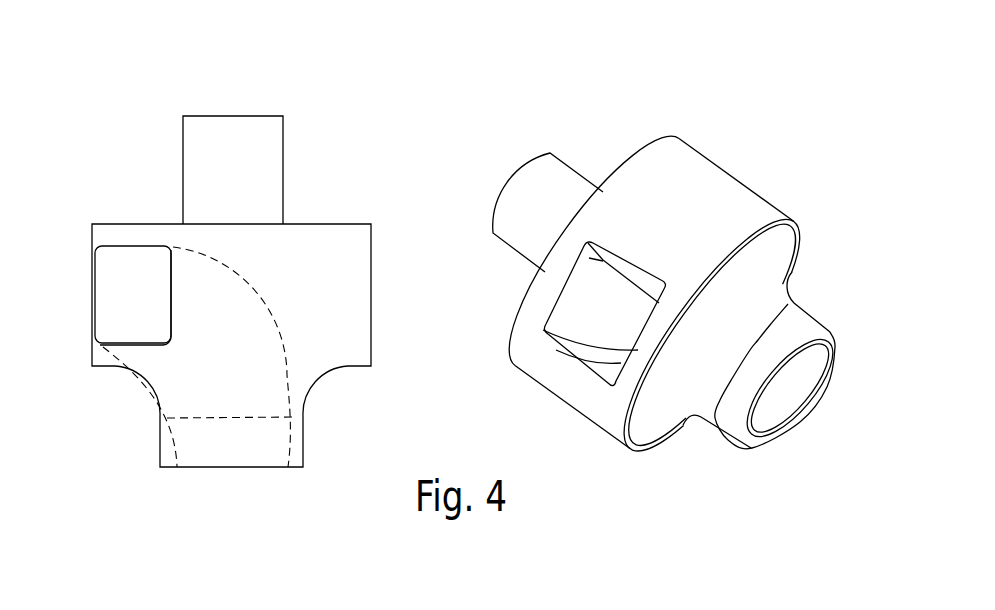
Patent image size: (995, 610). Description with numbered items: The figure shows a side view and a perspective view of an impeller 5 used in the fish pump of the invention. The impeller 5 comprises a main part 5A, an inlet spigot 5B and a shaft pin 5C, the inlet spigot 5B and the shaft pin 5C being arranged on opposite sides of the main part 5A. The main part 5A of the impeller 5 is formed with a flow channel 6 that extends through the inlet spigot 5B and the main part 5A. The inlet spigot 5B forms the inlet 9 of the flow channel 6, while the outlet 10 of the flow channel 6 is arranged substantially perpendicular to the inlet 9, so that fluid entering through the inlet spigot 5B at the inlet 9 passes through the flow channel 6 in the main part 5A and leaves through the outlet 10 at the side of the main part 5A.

The impeller 5 is at (448, 288).
The main part 5A is at (446, 301).
The inlet spigot 5B is at (143, 417).
The shaft pin 5C is at (242, 135).
The flow channel 6 is at (212, 341).
The inlet 9 is at (227, 485).
The outlet 10 is at (125, 290).